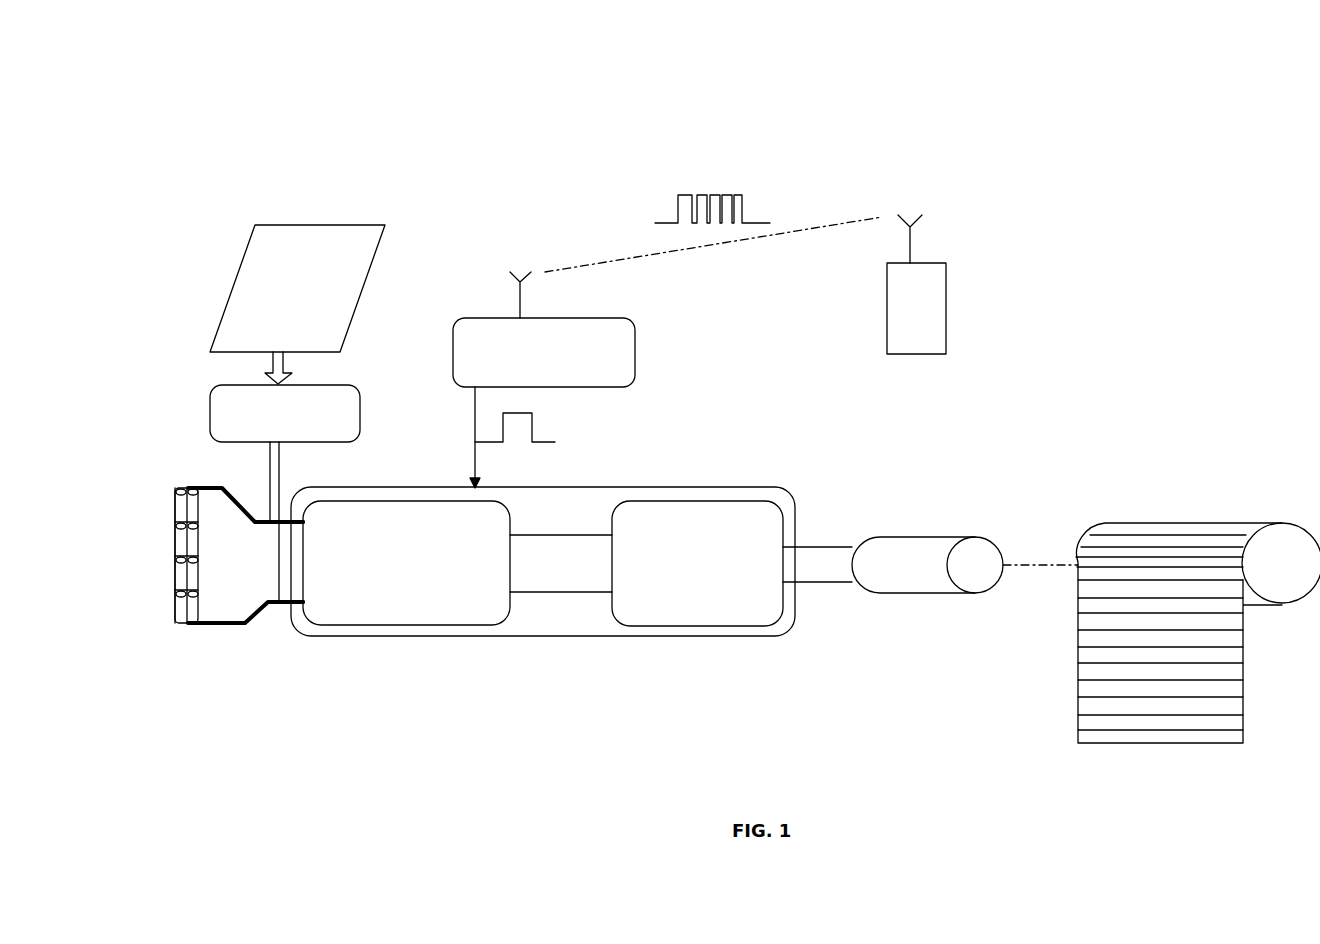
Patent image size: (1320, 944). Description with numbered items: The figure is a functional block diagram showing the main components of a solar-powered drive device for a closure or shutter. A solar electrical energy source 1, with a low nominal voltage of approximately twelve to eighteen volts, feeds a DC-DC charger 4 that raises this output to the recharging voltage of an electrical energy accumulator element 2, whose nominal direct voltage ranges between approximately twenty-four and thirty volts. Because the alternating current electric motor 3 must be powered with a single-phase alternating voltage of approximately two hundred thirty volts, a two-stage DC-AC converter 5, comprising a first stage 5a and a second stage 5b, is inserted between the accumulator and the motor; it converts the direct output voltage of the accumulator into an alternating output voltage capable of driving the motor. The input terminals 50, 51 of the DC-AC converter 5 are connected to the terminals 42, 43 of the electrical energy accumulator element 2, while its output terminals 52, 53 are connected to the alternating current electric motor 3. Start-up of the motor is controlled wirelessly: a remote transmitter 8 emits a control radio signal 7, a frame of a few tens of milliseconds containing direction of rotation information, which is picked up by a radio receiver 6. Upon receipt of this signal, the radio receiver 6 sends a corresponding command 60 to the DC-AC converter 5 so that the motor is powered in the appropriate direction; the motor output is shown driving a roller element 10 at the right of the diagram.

The solar electrical energy source 1 is at (270, 282).
The electrical energy accumulator element 2 is at (182, 627).
The alternating current electric motor 3 is at (922, 578).
The DC-DC charger 4 is at (255, 415).
The DC-AC converter 5 is at (553, 638).
The first stage of the DC-AC converter 5a is at (385, 588).
The second stage of the DC-AC converter 5b is at (707, 588).
The radio receiver 6 is at (627, 345).
The control radio signal 7 is at (685, 197).
The remote transmitter 8 is at (925, 295).
The roller shade 10 is at (1170, 568).
The terminal of the electrical energy accumulator element 42 is at (210, 485).
The terminal of the electrical energy accumulator element 43 is at (227, 627).
The input terminal of the DC-AC converter 50 is at (282, 520).
The input terminal of the DC-AC converter 51 is at (283, 627).
The output terminal of the DC-AC converter 52 is at (830, 547).
The output terminal of the DC-AC converter 53 is at (822, 583).
The command 60 is at (532, 422).